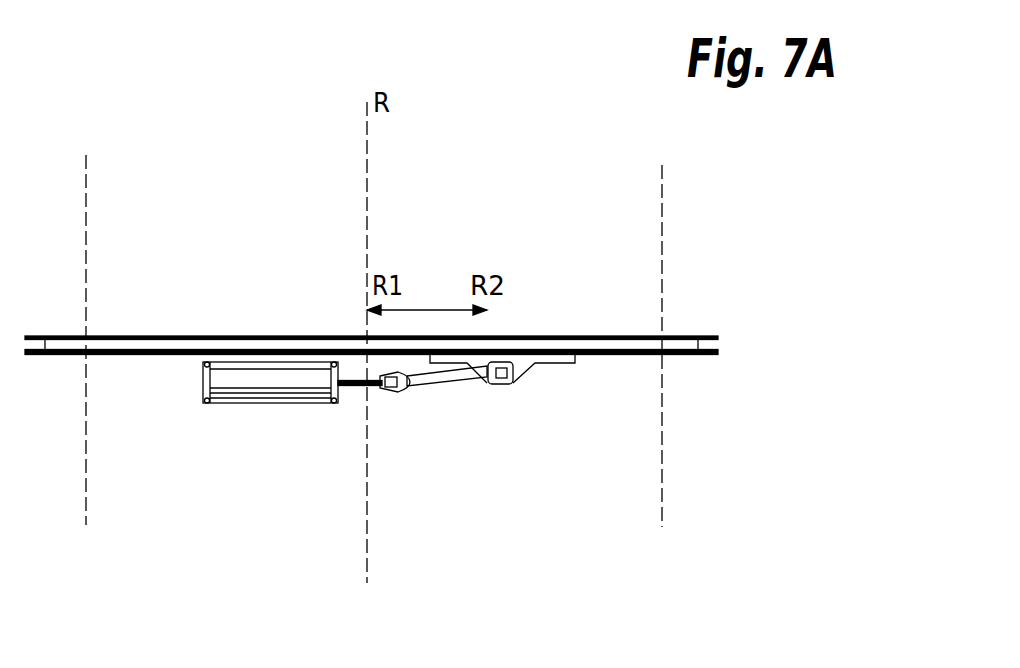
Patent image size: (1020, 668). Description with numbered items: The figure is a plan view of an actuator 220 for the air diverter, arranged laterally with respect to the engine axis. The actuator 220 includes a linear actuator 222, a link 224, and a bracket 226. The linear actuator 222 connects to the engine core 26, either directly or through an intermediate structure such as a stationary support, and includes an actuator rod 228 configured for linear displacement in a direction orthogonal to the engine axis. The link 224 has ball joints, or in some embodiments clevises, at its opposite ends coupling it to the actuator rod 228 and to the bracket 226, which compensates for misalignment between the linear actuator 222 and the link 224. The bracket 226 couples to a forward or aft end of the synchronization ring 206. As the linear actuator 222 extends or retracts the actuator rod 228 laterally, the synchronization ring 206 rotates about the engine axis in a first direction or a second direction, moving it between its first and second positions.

The engine core 26 is at (507, 186).
The actuator 220 is at (222, 184).
The synchronization ring 206 is at (133, 345).
The linear actuator 222 is at (258, 380).
The link 224 is at (438, 383).
The bracket 226 is at (519, 363).
The actuator rod 228 is at (353, 386).